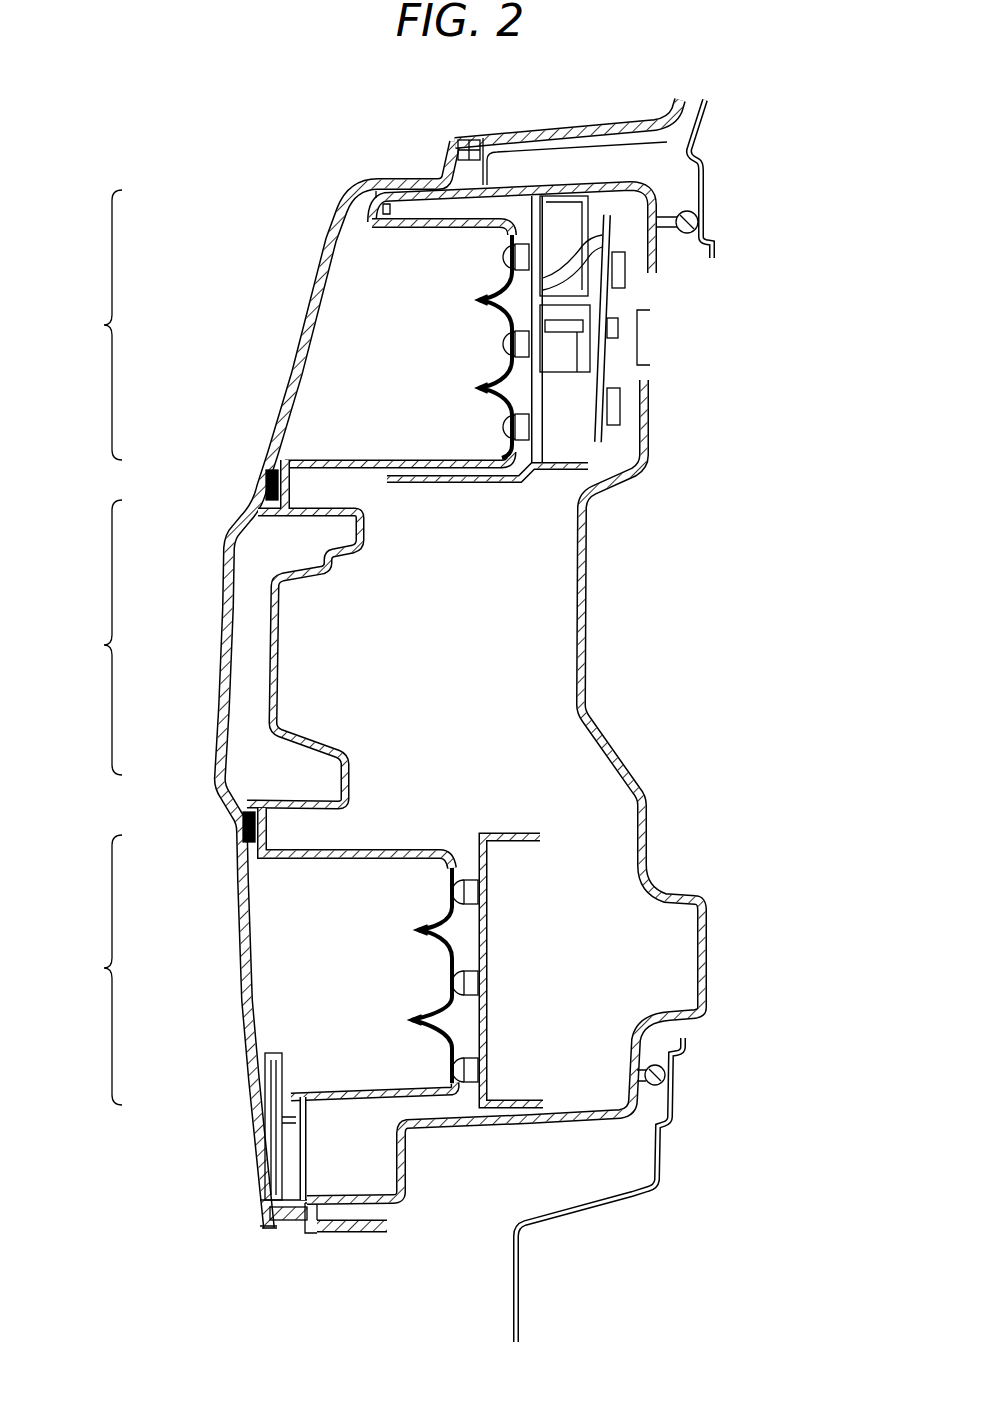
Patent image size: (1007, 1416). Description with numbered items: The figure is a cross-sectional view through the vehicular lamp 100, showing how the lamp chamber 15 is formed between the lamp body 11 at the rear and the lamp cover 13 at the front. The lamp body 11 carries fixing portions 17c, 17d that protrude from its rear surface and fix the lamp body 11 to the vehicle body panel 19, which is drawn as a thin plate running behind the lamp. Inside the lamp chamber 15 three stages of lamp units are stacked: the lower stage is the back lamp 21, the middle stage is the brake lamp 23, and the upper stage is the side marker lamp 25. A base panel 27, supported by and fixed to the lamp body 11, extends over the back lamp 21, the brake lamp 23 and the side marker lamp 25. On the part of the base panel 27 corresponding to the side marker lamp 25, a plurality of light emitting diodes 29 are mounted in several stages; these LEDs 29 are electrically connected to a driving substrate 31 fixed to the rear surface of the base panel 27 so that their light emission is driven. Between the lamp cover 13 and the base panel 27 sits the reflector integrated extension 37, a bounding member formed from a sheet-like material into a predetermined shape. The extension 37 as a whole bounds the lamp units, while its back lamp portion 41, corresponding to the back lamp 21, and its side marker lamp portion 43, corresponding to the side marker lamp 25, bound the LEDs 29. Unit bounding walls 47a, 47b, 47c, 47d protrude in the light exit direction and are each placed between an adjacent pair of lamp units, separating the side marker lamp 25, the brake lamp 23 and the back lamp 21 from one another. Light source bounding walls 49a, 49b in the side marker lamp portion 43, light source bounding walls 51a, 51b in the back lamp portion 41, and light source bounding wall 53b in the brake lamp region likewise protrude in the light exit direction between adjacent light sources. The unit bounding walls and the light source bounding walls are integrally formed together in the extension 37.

The vehicular lamp 100 is at (243, 164).
The lamp body 11 is at (665, 452).
The lamp cover 13 is at (230, 950).
The lamp chamber 15 is at (268, 888).
The fixing portion 17c is at (690, 240).
The fixing portion 17d is at (657, 1090).
The vehicle body panel 19 is at (704, 170).
The back lamp 21 is at (92, 970).
The brake lamp 23 is at (92, 637).
The side marker lamp 25 is at (92, 325).
The base panel 27 is at (530, 487).
The light emitting diode 29 is at (503, 255).
The driving substrate 31 is at (625, 284).
The reflector integrated extension 37 is at (366, 190).
The back lamp portion 41 is at (420, 953).
The side marker lamp portion 43 is at (478, 319).
The unit bounding wall 47a is at (383, 222).
The unit bounding wall 47b is at (298, 460).
The unit bounding wall 47c is at (262, 805).
The unit bounding wall 47d is at (307, 1078).
The light source bounding wall 49a is at (479, 300).
The light source bounding wall 49b is at (479, 388).
The light source bounding wall 51a is at (418, 930).
The light source bounding wall 51b is at (412, 1020).
The light source bounding wall 53b is at (270, 640).